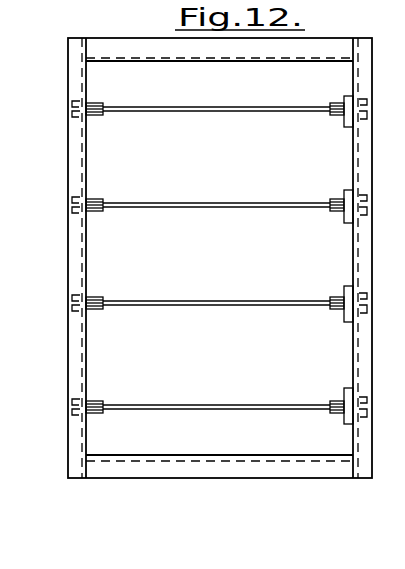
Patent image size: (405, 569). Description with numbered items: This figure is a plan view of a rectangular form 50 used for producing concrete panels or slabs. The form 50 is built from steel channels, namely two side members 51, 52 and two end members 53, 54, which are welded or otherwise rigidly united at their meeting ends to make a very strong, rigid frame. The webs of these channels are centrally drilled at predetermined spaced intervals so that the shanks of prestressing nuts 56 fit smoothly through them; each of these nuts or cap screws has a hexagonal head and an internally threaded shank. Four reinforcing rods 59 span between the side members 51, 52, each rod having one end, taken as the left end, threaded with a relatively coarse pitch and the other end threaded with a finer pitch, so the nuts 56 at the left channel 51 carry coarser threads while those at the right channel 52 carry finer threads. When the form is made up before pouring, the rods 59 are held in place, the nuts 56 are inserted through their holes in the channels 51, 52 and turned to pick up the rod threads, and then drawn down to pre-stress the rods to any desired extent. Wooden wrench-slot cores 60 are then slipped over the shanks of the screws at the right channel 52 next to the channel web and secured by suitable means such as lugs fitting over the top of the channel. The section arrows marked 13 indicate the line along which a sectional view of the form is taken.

The rectangular form 50 is at (158, 485).
The side member 51 is at (80, 258).
The side member 52 is at (360, 248).
The end member 53 is at (242, 58).
The end member 54 is at (267, 464).
The prestressing nut 56 is at (71, 110).
The reinforcing rod 59 is at (268, 108).
The wooden wrench-slot core 60 is at (350, 96).
The section line 13- 13 is at (43, 368).